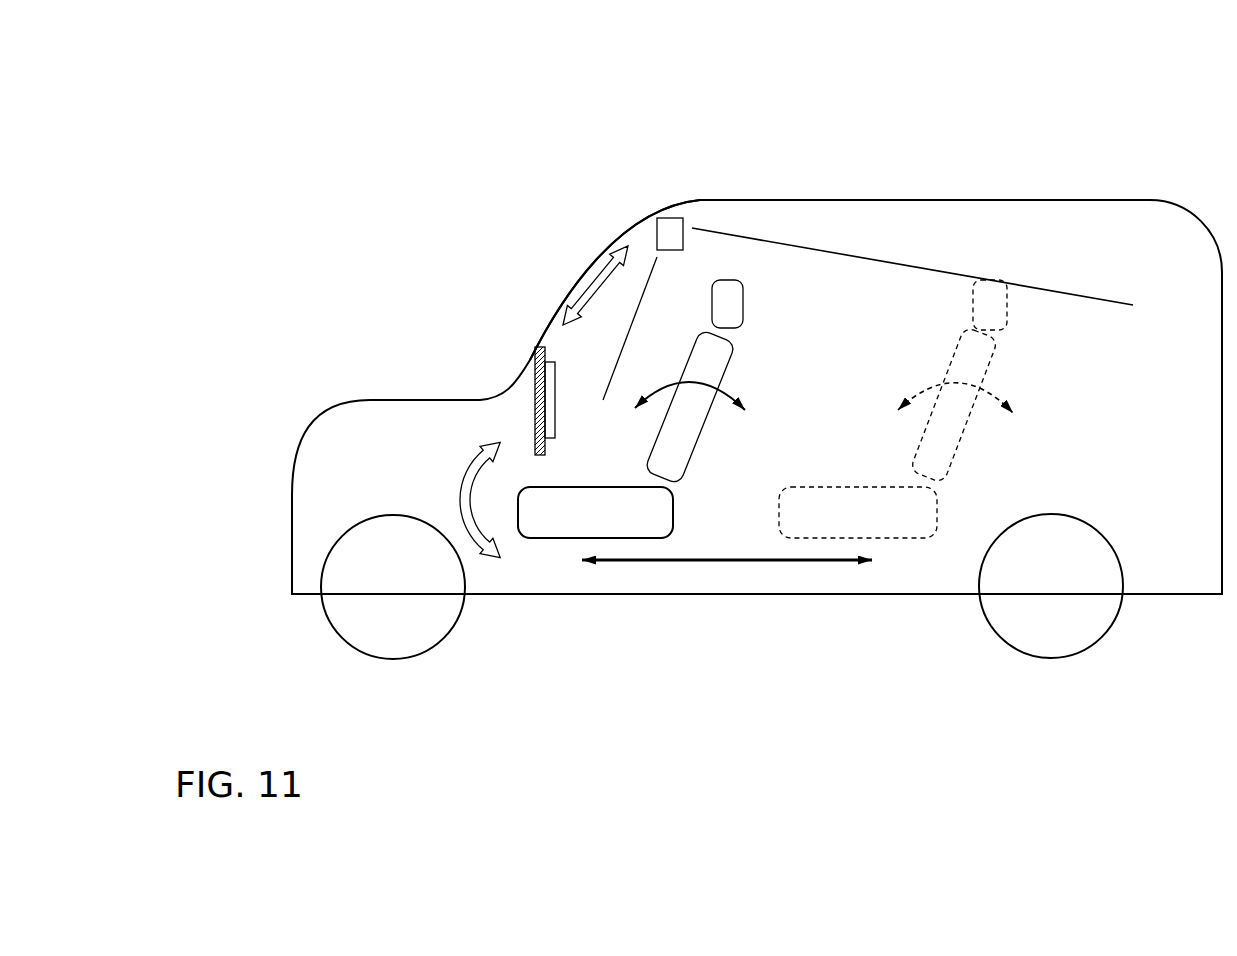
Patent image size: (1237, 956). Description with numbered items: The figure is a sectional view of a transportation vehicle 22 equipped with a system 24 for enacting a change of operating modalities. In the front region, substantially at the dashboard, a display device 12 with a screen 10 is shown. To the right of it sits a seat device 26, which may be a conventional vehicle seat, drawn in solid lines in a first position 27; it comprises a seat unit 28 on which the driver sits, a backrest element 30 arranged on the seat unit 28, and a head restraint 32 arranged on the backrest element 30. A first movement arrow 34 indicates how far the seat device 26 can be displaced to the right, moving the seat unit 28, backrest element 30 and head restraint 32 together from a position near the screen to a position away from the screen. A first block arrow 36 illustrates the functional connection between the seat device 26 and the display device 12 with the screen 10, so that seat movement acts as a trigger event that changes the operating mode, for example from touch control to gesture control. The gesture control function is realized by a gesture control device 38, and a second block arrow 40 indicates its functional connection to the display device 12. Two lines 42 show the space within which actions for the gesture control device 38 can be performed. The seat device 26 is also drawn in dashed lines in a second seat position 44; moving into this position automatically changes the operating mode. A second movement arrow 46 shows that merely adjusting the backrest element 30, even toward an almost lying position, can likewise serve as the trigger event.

The screen 10 is at (557, 375).
The display device 12 is at (530, 386).
The transportation vehicle 22 is at (1157, 158).
The system for enacting a change of operating modalities 24 is at (533, 276).
The seat device 26 is at (538, 542).
The first position 27 is at (588, 605).
The seat unit 28 is at (573, 518).
The backrest element 30 is at (716, 365).
The head restraint 32 is at (732, 297).
The first movement arrow 34 is at (733, 562).
The first block arrow 36 is at (463, 500).
The gesture control device 38 is at (668, 232).
The second block arrow 40 is at (603, 267).
The lines 42 is at (650, 293).
The second seat position 44 is at (855, 605).
The second movement arrow 46 is at (745, 390).